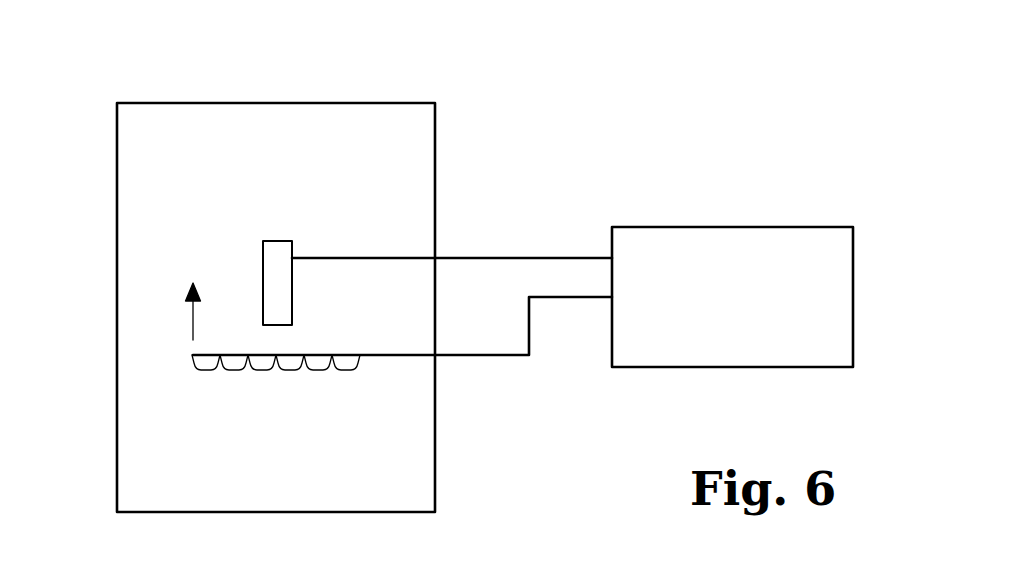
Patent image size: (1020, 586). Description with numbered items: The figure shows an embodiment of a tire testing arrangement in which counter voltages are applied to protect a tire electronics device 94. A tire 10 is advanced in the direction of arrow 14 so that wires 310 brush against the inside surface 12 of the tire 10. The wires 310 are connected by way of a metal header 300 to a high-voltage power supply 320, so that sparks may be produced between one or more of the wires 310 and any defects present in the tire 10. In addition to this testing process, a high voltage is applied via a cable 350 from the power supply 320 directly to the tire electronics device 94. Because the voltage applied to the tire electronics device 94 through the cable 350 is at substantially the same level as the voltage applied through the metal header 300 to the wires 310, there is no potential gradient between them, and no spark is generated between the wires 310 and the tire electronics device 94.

The tire 10 is at (277, 103).
The inside surface 12 is at (200, 167).
The arrow 14 is at (192, 322).
The tire electronics device 94 is at (292, 241).
The metal header 300 is at (385, 355).
The wires 310 is at (263, 372).
The high-voltage power supply 320 is at (689, 309).
The cable 350 is at (485, 258).